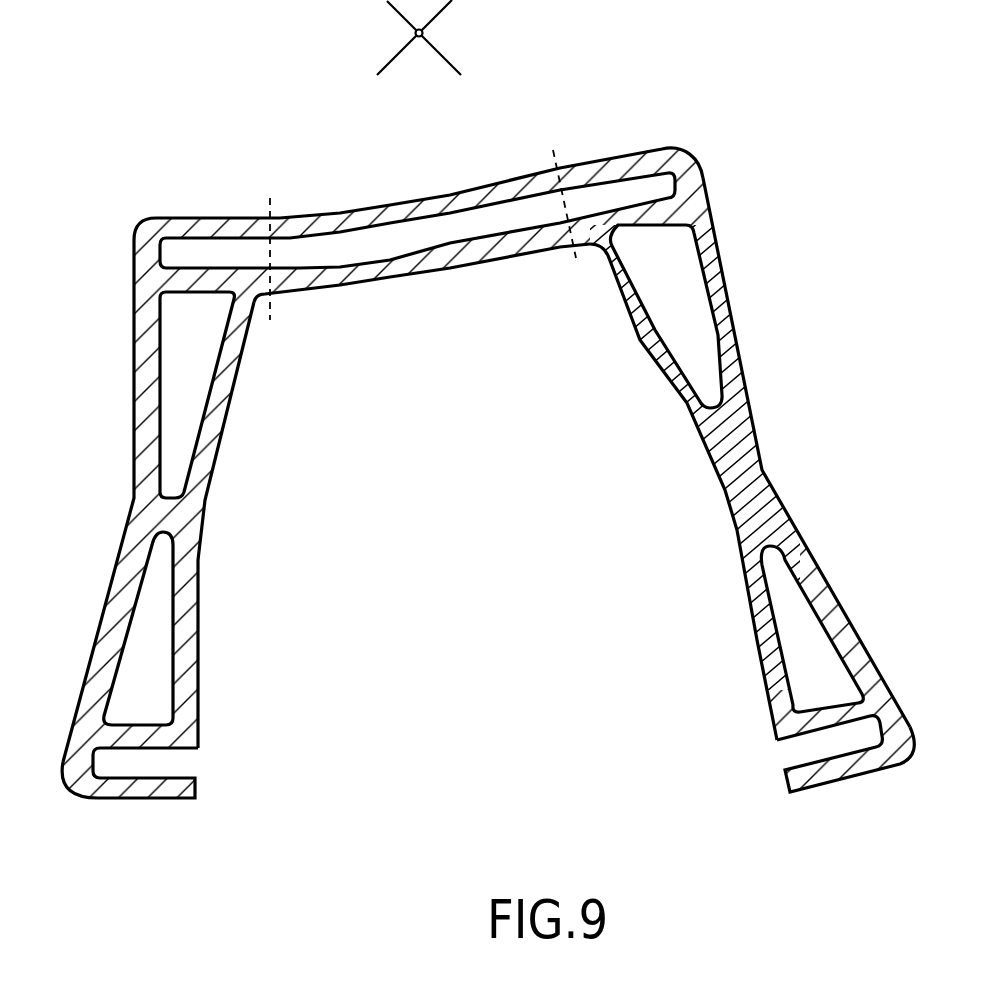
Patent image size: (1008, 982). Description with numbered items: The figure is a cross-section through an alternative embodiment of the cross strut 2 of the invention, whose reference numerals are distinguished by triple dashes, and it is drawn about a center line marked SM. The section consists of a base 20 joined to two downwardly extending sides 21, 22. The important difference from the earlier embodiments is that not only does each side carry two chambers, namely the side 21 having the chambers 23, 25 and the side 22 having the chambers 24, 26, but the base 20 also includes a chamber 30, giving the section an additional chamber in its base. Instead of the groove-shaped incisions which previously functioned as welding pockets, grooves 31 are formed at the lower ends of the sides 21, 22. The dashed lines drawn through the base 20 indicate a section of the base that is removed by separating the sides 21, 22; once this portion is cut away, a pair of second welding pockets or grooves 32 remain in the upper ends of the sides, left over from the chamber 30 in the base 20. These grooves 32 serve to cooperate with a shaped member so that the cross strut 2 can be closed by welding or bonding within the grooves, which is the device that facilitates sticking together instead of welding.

The cross strut 2 is at (775, 405).
The base 20 is at (527, 242).
The side 21 is at (160, 510).
The side 22 is at (748, 502).
The chamber 23 is at (197, 360).
The chamber 24 is at (660, 303).
The chamber 25 is at (160, 647).
The chamber 26 is at (800, 650).
The chamber 30 is at (398, 237).
The groove 31 is at (150, 762).
The second welding pocket or groove 32 is at (203, 252).
The center plane of symmetry SM is at (389, 37).